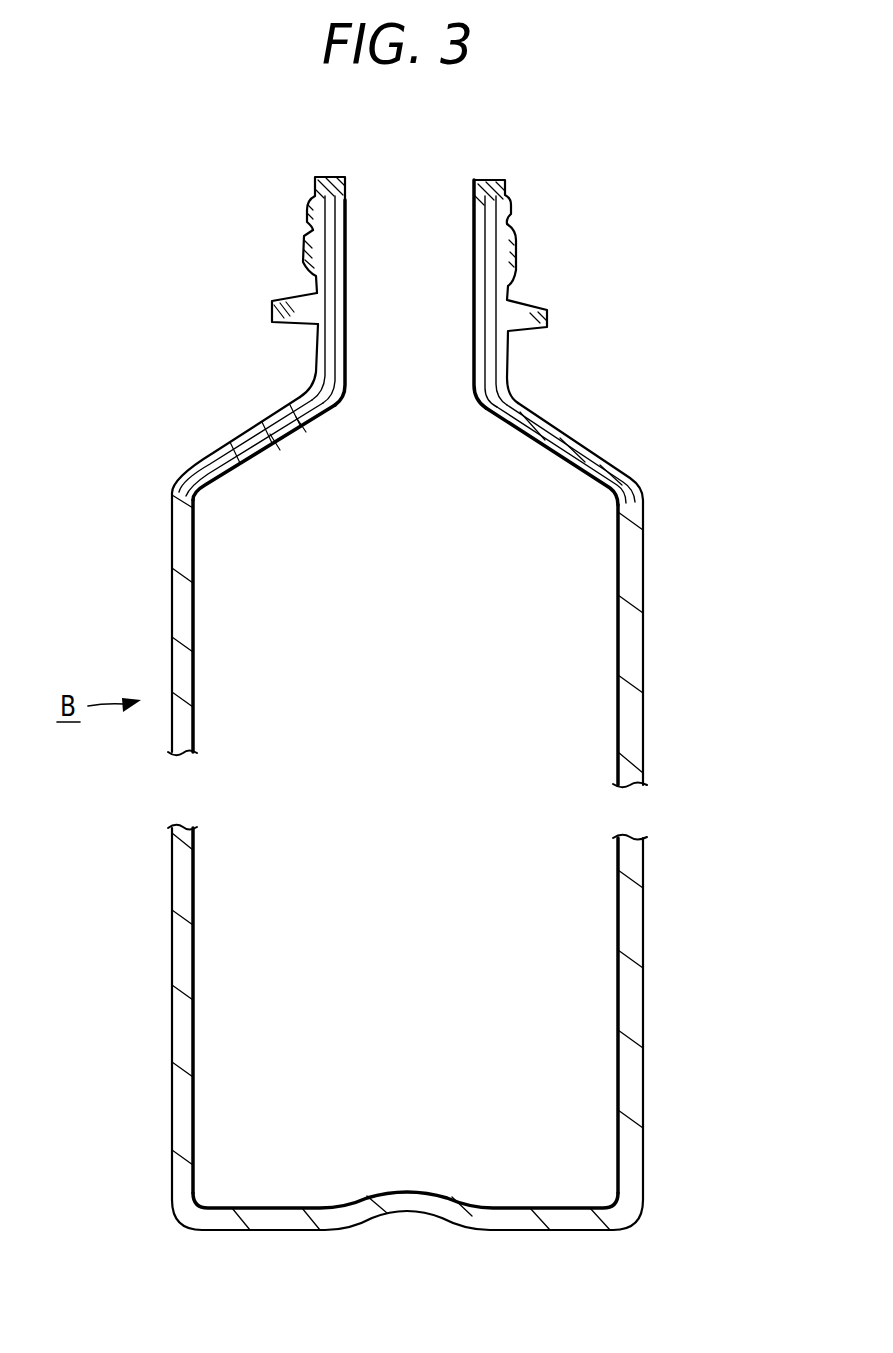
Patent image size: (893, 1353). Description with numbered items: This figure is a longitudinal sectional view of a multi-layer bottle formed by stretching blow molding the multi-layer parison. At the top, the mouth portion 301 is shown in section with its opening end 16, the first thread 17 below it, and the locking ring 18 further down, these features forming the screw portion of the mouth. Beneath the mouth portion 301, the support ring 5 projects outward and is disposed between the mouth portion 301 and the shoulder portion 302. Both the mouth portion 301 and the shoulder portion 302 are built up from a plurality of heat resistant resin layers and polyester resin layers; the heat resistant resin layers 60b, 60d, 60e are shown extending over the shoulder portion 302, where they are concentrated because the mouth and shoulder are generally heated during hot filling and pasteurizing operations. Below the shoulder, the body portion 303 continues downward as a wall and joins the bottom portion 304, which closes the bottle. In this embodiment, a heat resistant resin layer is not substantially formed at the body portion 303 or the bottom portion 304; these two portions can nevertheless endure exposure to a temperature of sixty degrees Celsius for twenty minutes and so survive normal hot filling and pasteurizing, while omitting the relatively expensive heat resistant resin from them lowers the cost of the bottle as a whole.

The opening end 16 is at (326, 176).
The first thread 17 is at (312, 198).
The locking ring 18 is at (303, 253).
The support ring 5 is at (272, 312).
The heat resistant resin layer 60d is at (303, 388).
The heat resistant resin layer 60b is at (268, 418).
The heat resistant resin layer 60e is at (323, 413).
The mouth portion 301 is at (545, 258).
The shoulder portion 302 is at (557, 387).
The body portion 303 is at (662, 683).
The bottom portion 304 is at (563, 1233).